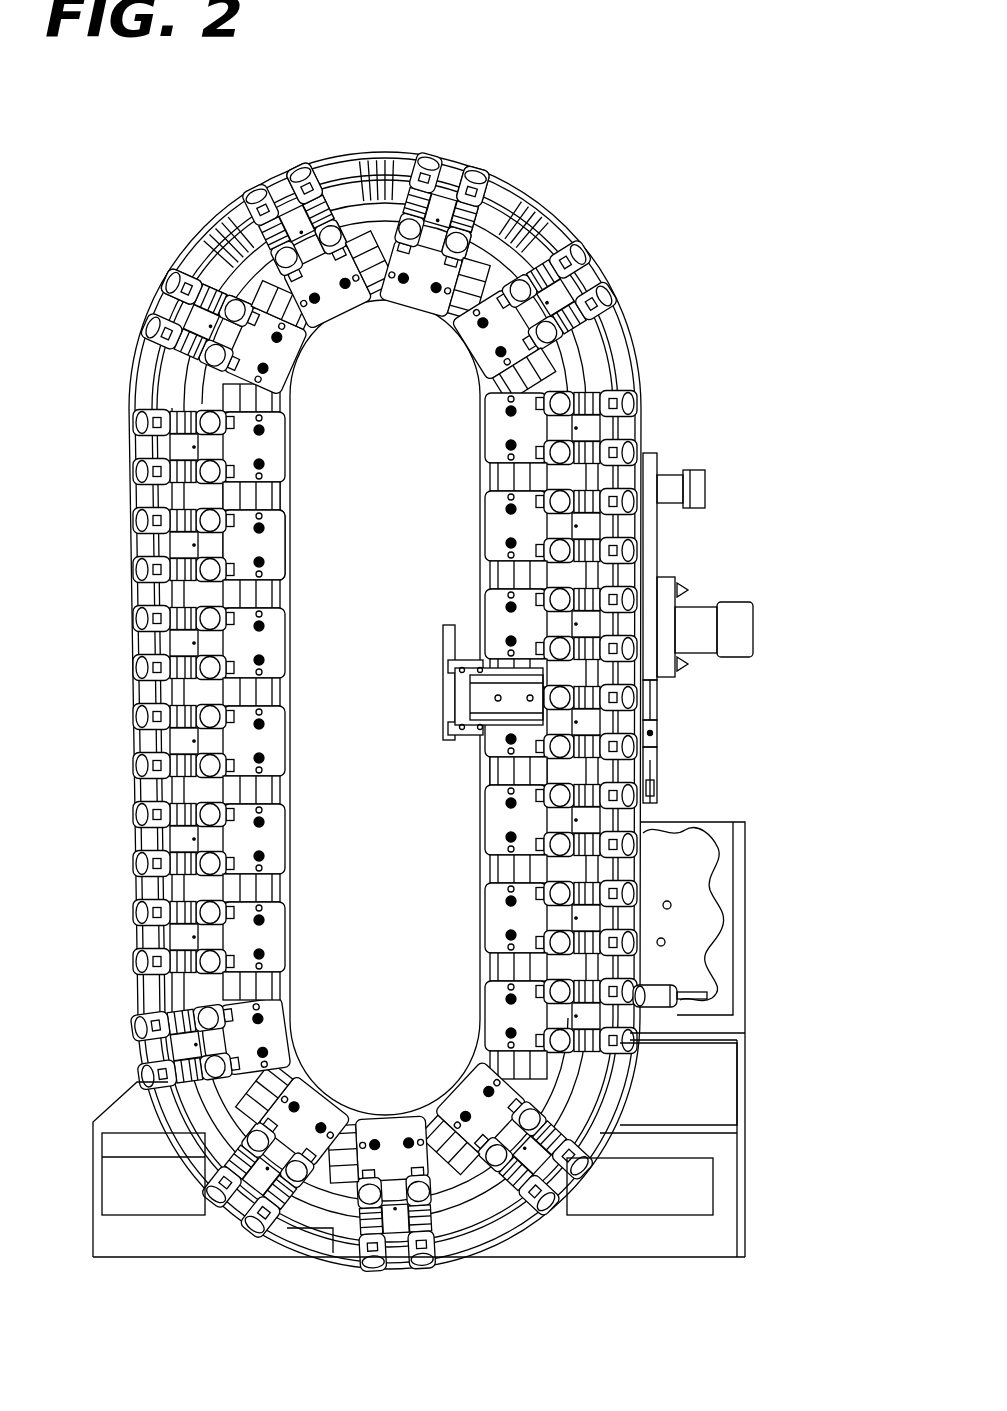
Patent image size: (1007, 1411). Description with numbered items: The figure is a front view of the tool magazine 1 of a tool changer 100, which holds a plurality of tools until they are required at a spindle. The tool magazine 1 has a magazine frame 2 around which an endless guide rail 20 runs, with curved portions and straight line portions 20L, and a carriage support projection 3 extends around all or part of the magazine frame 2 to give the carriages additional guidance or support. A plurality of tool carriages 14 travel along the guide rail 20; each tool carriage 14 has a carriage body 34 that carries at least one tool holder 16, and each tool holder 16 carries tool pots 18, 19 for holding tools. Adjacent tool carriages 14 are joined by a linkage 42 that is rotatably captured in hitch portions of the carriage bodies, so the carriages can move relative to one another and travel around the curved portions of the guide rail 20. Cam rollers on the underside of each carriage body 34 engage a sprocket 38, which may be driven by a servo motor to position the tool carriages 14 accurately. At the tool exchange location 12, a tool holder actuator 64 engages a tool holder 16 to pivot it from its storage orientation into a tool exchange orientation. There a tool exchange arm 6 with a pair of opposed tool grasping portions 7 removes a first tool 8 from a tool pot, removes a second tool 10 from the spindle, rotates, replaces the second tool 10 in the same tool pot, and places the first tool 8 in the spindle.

The tool changer 100 is at (657, 153).
The tool magazine 1 is at (556, 194).
The magazine frame 2 is at (624, 342).
The carriage support projection 3 is at (230, 1113).
The tool exchange arm 6 is at (694, 581).
The tool grasping portions 7 is at (648, 453).
The first tool 8 is at (707, 996).
The second tool 10 is at (705, 489).
The tool exchange location 12 is at (658, 704).
The tool carriage 14 is at (134, 311).
The tool holder 16 is at (207, 278).
The tool pot 18 is at (477, 160).
The tool pot 19 is at (340, 205).
The guide rail 20 is at (230, 400).
The straight line portions 20L is at (497, 767).
The carriage body 34 is at (275, 546).
The sprocket 38 is at (705, 876).
The linkage 42 is at (262, 497).
The tool holder actuator 64 is at (437, 700).